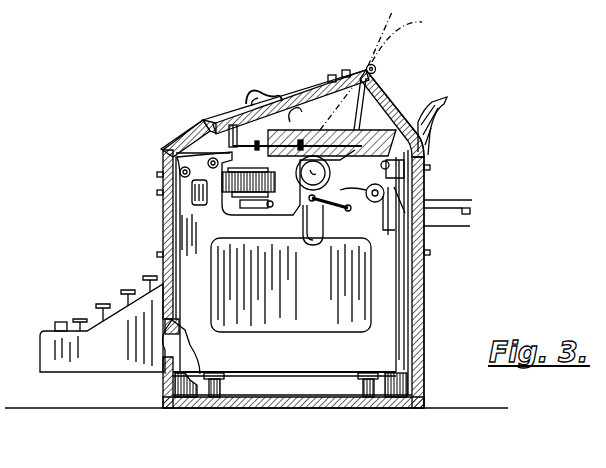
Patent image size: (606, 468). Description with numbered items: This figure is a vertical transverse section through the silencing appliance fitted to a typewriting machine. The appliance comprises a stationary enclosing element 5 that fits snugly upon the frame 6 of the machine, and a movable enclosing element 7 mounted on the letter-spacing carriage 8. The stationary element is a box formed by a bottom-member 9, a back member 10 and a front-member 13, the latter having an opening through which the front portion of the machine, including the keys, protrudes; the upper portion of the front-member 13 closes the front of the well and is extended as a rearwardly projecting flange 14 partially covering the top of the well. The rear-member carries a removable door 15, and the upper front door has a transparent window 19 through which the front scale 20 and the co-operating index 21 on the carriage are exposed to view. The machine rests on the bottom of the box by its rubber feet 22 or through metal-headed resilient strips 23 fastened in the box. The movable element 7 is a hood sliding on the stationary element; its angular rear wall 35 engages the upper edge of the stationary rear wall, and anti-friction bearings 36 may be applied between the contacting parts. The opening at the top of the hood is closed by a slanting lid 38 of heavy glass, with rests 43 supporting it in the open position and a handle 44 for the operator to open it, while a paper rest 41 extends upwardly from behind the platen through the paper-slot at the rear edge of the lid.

The stationary enclosing element 5 is at (425, 351).
The frame 6 is at (386, 291).
The movable enclosing element 7 is at (431, 135).
The letter-spacing carriage 8 is at (365, 130).
The bottom-member 9 is at (313, 408).
The back member 10 is at (425, 372).
The front-member 13 is at (163, 381).
The rearwardly projecting flange 14 is at (200, 123).
The removable door 15 is at (425, 302).
The transparent window 19 is at (197, 125).
The front scale 20 is at (190, 147).
The index 21 is at (163, 152).
The rubber feet 22 is at (167, 411).
The metal-headed resilient strips 23 is at (210, 397).
The angular rear wall 35 is at (401, 123).
The anti-friction bearings 36 is at (425, 225).
The slanting lid 38 is at (300, 98).
The paper rest 41 is at (375, 68).
The rests 43 is at (440, 107).
The handle 44 is at (260, 92).